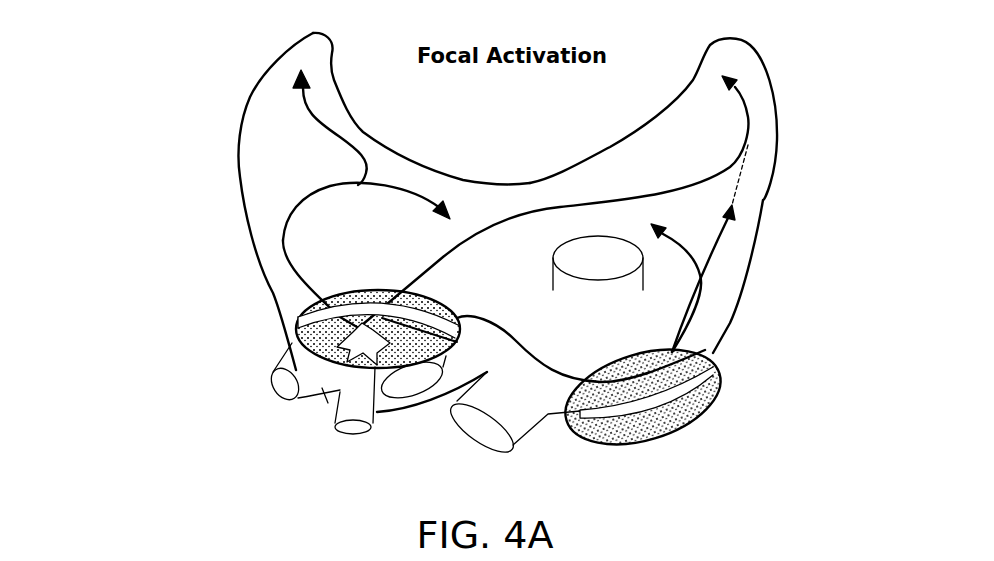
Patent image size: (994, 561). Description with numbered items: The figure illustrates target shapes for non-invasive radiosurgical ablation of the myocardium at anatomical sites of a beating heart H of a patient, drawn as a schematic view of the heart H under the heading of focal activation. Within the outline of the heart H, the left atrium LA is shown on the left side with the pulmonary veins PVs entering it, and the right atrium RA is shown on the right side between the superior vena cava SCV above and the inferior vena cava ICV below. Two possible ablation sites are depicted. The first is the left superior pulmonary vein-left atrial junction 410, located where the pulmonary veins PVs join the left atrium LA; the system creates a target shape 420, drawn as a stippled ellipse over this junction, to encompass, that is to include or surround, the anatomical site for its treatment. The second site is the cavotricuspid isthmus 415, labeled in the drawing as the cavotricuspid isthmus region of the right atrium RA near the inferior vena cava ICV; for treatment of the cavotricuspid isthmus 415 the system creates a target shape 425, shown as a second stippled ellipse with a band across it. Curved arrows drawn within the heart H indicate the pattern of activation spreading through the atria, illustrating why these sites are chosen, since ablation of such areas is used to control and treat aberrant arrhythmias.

The left superior pulmonary vein-left atrial junction 410 is at (265, 335).
The cavotricuspid isthmus 415 is at (646, 450).
The target shape 420 is at (372, 290).
The target shape 425 is at (622, 362).
The heart H is at (247, 215).
The left atrium LA is at (336, 198).
The right atrium RA is at (713, 278).
The superior vena cava SCV is at (598, 263).
The inferior vena cava ICV is at (512, 427).
The pulmonary veins PVs is at (292, 343).
The cavotricuspid isthmus cavotricuspid is at (667, 413).